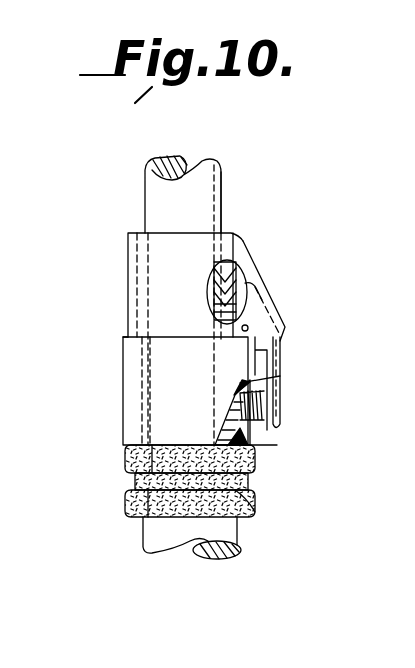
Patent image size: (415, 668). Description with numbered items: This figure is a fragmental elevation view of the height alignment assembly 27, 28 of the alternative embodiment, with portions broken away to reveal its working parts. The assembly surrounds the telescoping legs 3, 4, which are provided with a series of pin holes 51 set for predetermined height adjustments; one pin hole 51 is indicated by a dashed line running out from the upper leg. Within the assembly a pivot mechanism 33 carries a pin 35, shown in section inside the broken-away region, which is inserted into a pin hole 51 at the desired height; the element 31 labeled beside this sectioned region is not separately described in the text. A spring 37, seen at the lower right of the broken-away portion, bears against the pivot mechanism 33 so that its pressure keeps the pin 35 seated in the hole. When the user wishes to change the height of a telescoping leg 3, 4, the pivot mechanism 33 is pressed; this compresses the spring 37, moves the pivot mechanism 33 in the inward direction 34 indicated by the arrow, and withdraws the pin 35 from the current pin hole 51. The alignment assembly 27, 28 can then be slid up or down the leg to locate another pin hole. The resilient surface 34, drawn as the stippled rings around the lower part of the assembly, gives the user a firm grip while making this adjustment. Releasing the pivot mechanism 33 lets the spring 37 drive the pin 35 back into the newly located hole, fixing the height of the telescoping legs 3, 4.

The telescoping leg 3 is at (160, 198).
The telescoping leg 4 is at (162, 199).
The height alignment assembly 27 is at (168, 377).
The height alignment assembly 28 is at (166, 377).
The pin hole 51 is at (222, 197).
The clamp member 31 is at (228, 272).
The pin 35 is at (226, 300).
The pivot mechanism 33 is at (280, 301).
The resilient surface 34 is at (313, 382).
The spring 37 is at (256, 420).